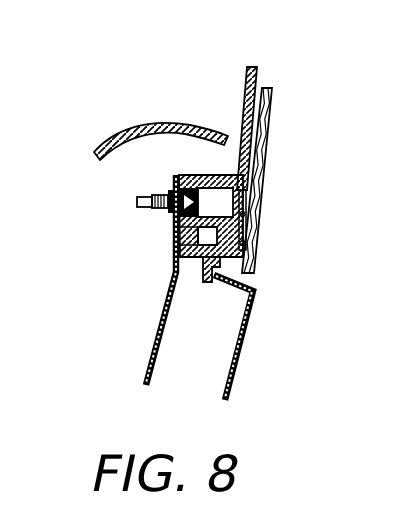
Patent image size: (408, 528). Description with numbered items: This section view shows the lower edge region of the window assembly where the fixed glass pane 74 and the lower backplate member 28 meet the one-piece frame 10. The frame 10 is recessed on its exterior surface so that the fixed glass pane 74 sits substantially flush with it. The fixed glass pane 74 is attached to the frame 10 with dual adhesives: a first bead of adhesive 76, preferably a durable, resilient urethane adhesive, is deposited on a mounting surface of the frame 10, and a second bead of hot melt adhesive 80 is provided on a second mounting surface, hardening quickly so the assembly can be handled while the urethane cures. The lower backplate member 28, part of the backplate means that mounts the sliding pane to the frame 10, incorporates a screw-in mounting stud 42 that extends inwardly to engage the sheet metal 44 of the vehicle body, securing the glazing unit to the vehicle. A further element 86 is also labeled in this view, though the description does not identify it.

The frame 10 is at (247, 93).
The lower backplate member 28 is at (191, 175).
The screw-in mounting stud 42 is at (137, 199).
The sheet metal 44 is at (158, 320).
The fixed glass pane 74 is at (253, 213).
The first bead of adhesive 76 is at (247, 214).
The second bead of hot melt adhesive 80 is at (248, 243).
The wall 86 is at (176, 236).